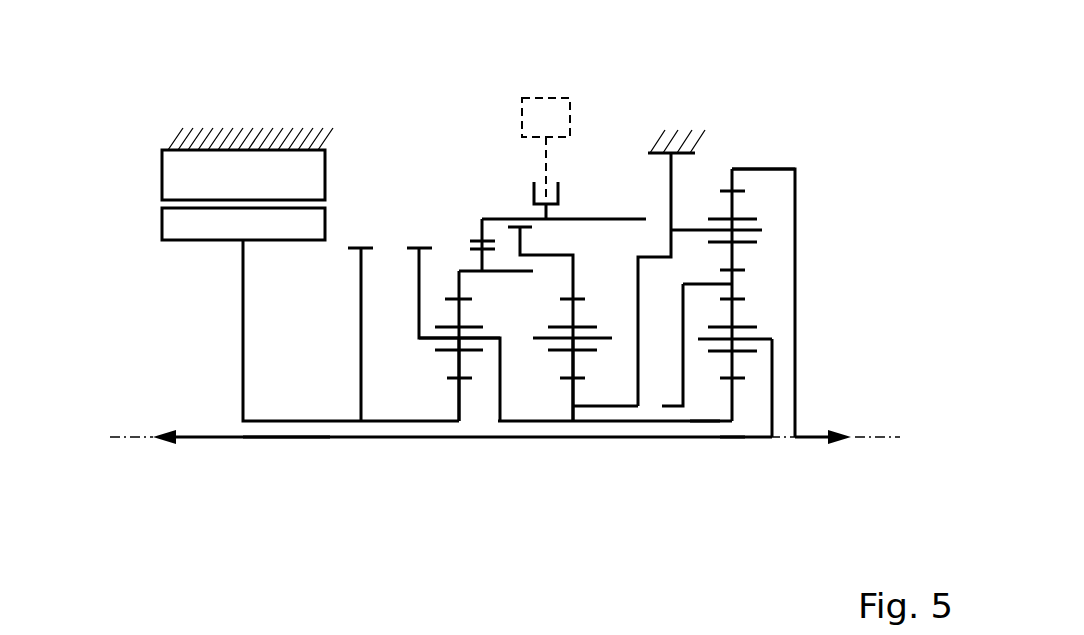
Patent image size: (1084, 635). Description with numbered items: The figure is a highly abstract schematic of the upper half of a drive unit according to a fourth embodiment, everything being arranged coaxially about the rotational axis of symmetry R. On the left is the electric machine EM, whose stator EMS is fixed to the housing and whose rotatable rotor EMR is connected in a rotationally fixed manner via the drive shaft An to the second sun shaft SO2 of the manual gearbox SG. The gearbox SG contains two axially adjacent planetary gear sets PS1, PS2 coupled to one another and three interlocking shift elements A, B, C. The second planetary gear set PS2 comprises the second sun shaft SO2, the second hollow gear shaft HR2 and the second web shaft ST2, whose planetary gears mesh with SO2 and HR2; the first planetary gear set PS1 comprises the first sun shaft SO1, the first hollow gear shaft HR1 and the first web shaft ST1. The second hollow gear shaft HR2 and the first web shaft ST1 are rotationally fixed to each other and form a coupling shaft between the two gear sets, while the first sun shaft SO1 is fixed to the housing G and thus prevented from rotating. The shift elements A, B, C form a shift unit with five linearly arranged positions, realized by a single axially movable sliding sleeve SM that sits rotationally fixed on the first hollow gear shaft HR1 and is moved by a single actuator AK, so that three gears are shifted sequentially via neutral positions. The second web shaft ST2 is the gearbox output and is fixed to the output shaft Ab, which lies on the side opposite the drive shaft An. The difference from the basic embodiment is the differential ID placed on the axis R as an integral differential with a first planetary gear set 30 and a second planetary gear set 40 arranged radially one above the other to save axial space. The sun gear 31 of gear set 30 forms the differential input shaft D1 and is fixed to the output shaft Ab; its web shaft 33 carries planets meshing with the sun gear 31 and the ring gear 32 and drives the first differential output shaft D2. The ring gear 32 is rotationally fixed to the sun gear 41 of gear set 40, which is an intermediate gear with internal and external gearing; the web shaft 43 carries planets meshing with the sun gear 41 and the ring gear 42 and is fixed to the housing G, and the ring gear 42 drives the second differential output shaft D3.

The stator EMS is at (173, 175).
The rotor EMR is at (173, 222).
The electric machine EM is at (183, 256).
The third shift element C is at (357, 232).
The second shift element B is at (416, 232).
The first shift element A is at (474, 208).
The sliding sleeve SM is at (525, 170).
The actuator AK is at (564, 80).
The first hollow gear shaft HR1 is at (576, 270).
The housing G is at (692, 92).
The ring gear 42 is at (730, 178).
The manual gearbox SG is at (820, 75).
The second planetary gear set 40 is at (822, 183).
The web shaft 43 is at (758, 230).
The sun gear 41 is at (740, 278).
The ring gear 32 is at (738, 298).
The web shaft 33 is at (763, 336).
The first planetary gear set 30 is at (808, 365).
The sun gear 31 is at (733, 395).
The differential ID is at (732, 462).
The first differential output shaft D2 is at (197, 440).
The drive shaft An is at (272, 440).
The second hollow gear shaft HR2 is at (457, 287).
The second web shaft ST2 is at (428, 340).
The second sun shaft SO2 is at (457, 402).
The output shaft Ab is at (518, 423).
The first sun shaft SO1 is at (571, 390).
The first web shaft ST1 is at (603, 340).
The differential input shaft D1 is at (702, 423).
The second planetary gear set PS2 is at (458, 462).
The first planetary gear set PS1 is at (572, 462).
The rotational axis of symmetry R is at (858, 440).
The second differential output shaft D3 is at (808, 440).